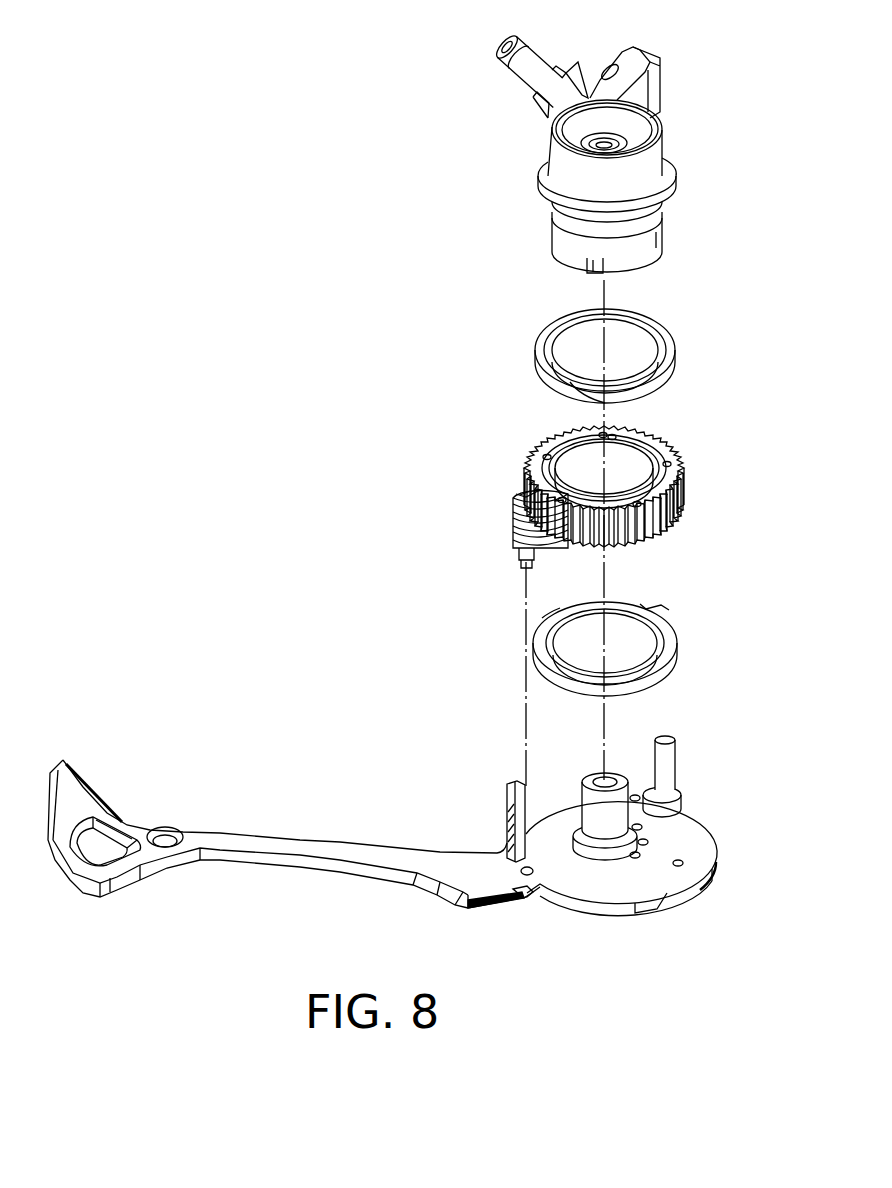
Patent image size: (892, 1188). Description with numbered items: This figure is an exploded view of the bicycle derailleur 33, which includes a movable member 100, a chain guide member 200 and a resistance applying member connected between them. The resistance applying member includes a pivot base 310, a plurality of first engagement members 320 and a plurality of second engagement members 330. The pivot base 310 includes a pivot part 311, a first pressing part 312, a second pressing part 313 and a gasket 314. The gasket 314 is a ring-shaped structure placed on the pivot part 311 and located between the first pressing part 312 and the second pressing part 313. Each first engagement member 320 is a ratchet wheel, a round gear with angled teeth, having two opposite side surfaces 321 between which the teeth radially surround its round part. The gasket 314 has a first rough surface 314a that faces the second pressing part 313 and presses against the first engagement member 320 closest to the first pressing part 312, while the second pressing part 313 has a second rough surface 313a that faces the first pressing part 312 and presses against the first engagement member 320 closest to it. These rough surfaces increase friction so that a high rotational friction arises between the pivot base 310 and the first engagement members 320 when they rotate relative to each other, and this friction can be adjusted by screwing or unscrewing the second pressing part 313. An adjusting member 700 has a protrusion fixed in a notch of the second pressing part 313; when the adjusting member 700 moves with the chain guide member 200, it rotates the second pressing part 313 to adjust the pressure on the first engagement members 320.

The bicycle derailleur 33 is at (92, 74).
The movable member 100 is at (652, 155).
The first pressing part 312 is at (670, 197).
The pivot part 311 is at (635, 250).
The gasket 314 is at (665, 352).
The first rough surface 314a is at (562, 390).
The first engagement member 320 is at (665, 455).
The side surfaces 321 is at (573, 466).
The second engagement member 330 is at (532, 519).
The second pressing part 313 is at (669, 658).
The second rough surface 313a is at (549, 620).
The pivot base 310 is at (766, 178).
The adjusting member 700 is at (672, 766).
The chain guide member 200 is at (326, 880).